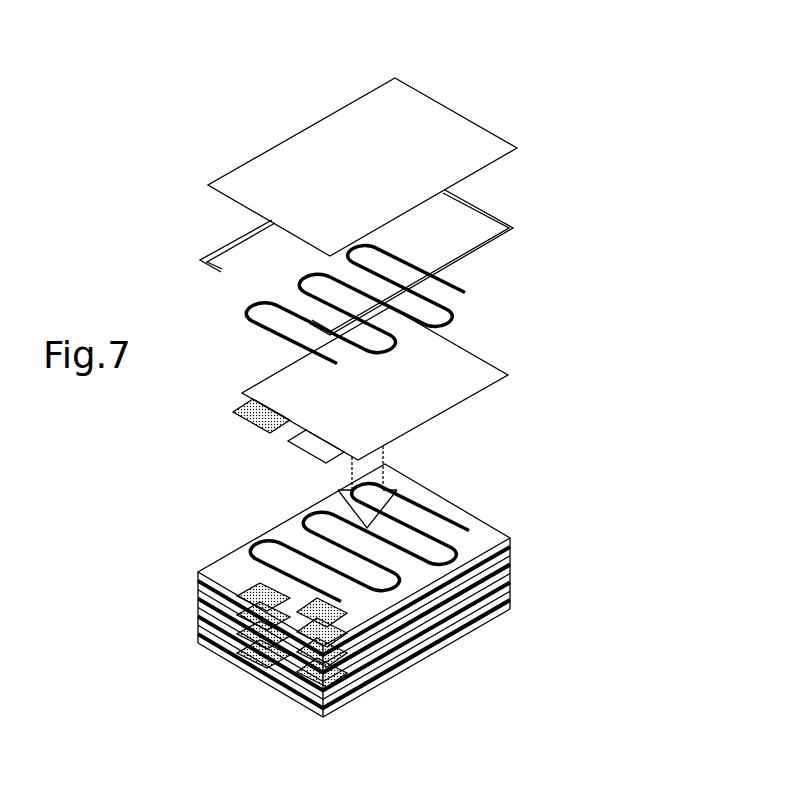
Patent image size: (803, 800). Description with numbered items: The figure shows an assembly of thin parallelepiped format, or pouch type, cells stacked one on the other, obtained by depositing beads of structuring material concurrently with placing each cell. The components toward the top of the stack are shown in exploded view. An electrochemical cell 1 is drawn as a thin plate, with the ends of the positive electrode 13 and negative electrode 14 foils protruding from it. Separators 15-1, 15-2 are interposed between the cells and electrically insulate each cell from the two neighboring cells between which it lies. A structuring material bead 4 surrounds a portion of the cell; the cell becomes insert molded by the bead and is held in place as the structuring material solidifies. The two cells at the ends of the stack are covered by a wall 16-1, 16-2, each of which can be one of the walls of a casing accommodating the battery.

The wall 16-1 is at (375, 107).
The structuring material bead 4 is at (500, 213).
The separator 15-1 is at (465, 292).
The electrochemical cell 1 is at (487, 375).
The positive electrode 13 is at (250, 427).
The negative electrode 14 is at (307, 455).
The separator 15-2 is at (445, 520).
The wall 16-2 is at (475, 663).